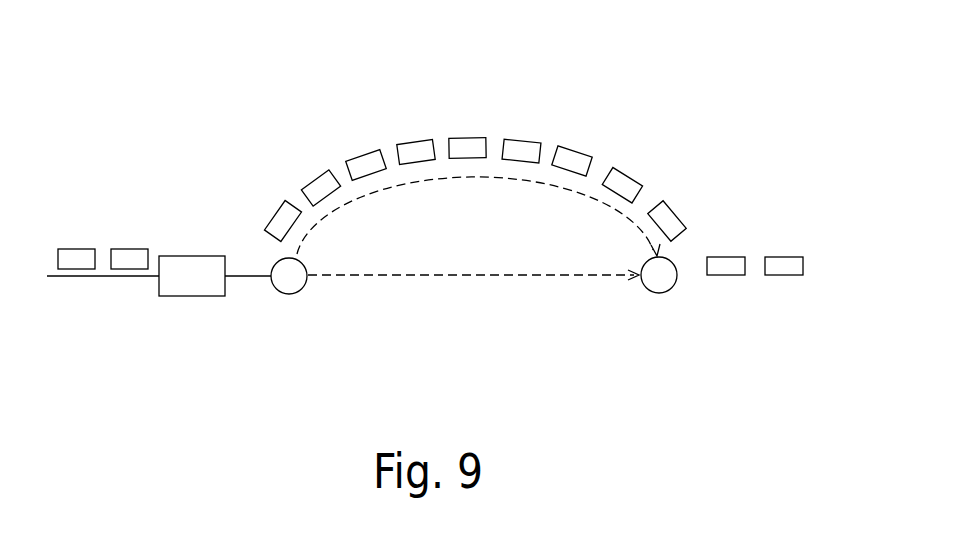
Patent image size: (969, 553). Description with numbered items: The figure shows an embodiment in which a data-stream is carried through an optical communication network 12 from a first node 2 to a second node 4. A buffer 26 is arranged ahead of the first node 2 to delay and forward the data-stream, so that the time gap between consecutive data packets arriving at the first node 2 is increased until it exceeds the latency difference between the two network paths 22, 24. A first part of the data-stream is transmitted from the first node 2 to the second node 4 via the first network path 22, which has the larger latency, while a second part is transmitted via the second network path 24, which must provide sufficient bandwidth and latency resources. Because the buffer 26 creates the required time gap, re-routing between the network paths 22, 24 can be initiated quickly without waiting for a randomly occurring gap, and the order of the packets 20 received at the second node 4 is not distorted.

The communication network 12 is at (200, 97).
The buffer 26 is at (193, 256).
The first node 2 is at (276, 292).
The second node 4 is at (675, 287).
The first network path 22 is at (451, 174).
The second network path 24 is at (542, 275).
The packets 20 is at (784, 207).